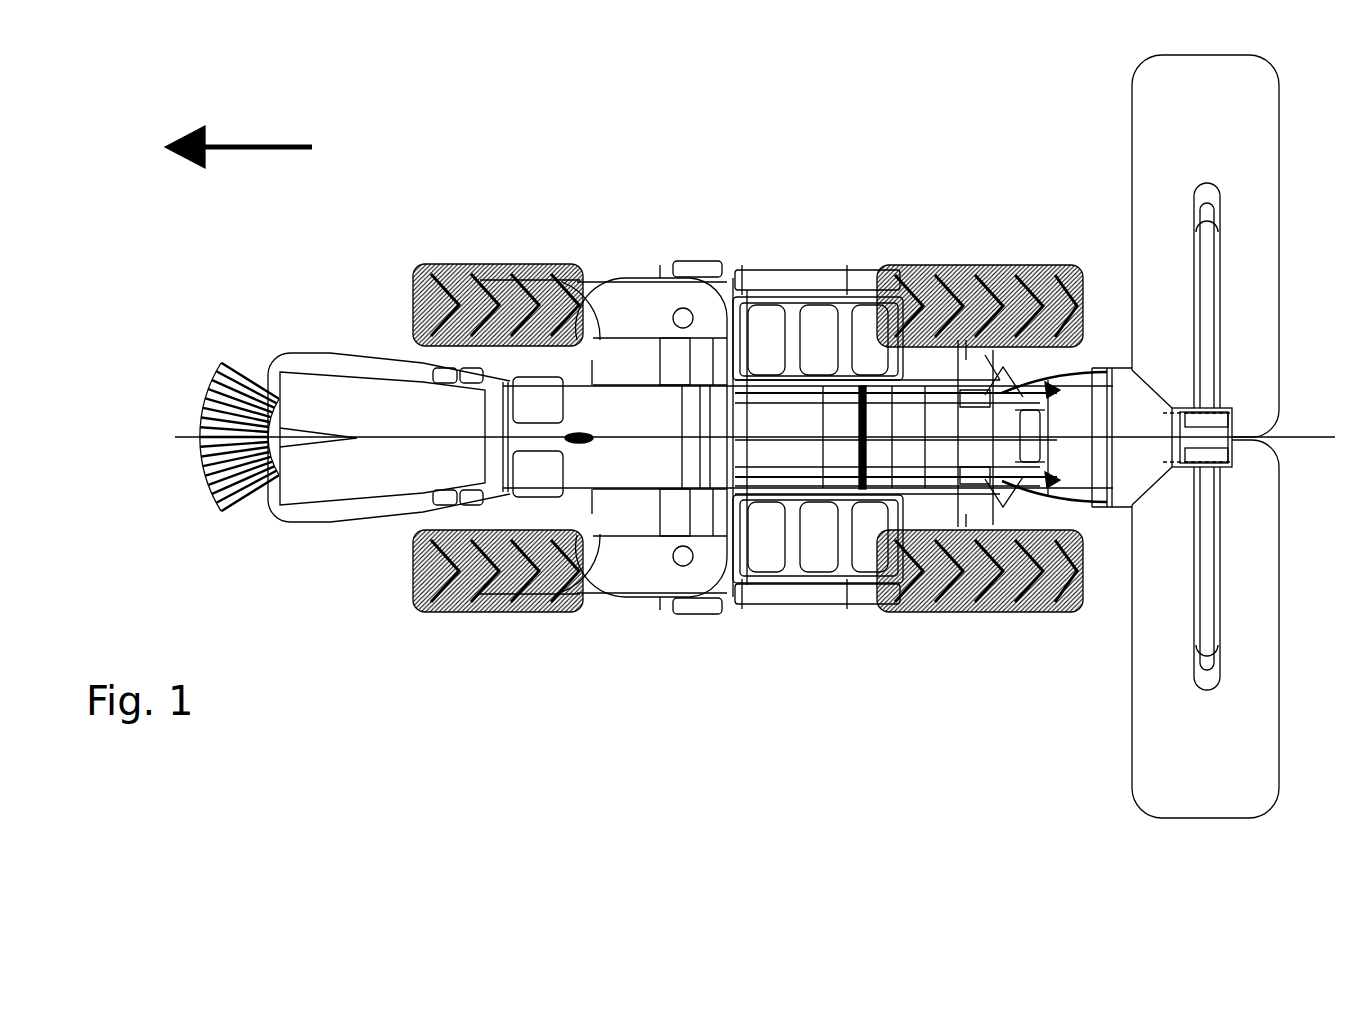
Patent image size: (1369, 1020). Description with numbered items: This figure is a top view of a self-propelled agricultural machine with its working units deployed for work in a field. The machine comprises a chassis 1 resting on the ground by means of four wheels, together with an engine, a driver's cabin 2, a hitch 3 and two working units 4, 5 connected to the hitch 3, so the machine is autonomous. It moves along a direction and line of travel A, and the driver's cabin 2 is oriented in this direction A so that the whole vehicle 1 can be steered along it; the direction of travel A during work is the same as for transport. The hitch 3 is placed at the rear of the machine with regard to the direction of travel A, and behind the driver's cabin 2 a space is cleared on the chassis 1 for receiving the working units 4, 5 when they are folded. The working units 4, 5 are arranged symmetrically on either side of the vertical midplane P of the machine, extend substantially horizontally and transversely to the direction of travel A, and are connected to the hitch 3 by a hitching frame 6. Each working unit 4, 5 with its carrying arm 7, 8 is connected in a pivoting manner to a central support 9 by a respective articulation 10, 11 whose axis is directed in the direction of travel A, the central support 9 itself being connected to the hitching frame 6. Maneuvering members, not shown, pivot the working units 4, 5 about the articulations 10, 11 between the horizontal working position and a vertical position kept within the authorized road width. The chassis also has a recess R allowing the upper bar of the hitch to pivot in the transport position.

The chassis 1 is at (782, 420).
The driver's cabin 2 is at (578, 500).
The hitch 3 is at (1040, 515).
The working unit 4 is at (1165, 125).
The working unit 5 is at (1155, 748).
The hitching frame 6 is at (1108, 362).
The carrying arm 7 is at (1197, 270).
The carrying arm 8 is at (1200, 555).
The central support 9 is at (1232, 432).
The articulation 10 is at (1236, 416).
The articulation 11 is at (1236, 460).
The vertical midplane P is at (183, 432).
The recess R is at (985, 355).
The direction of travel A is at (258, 150).